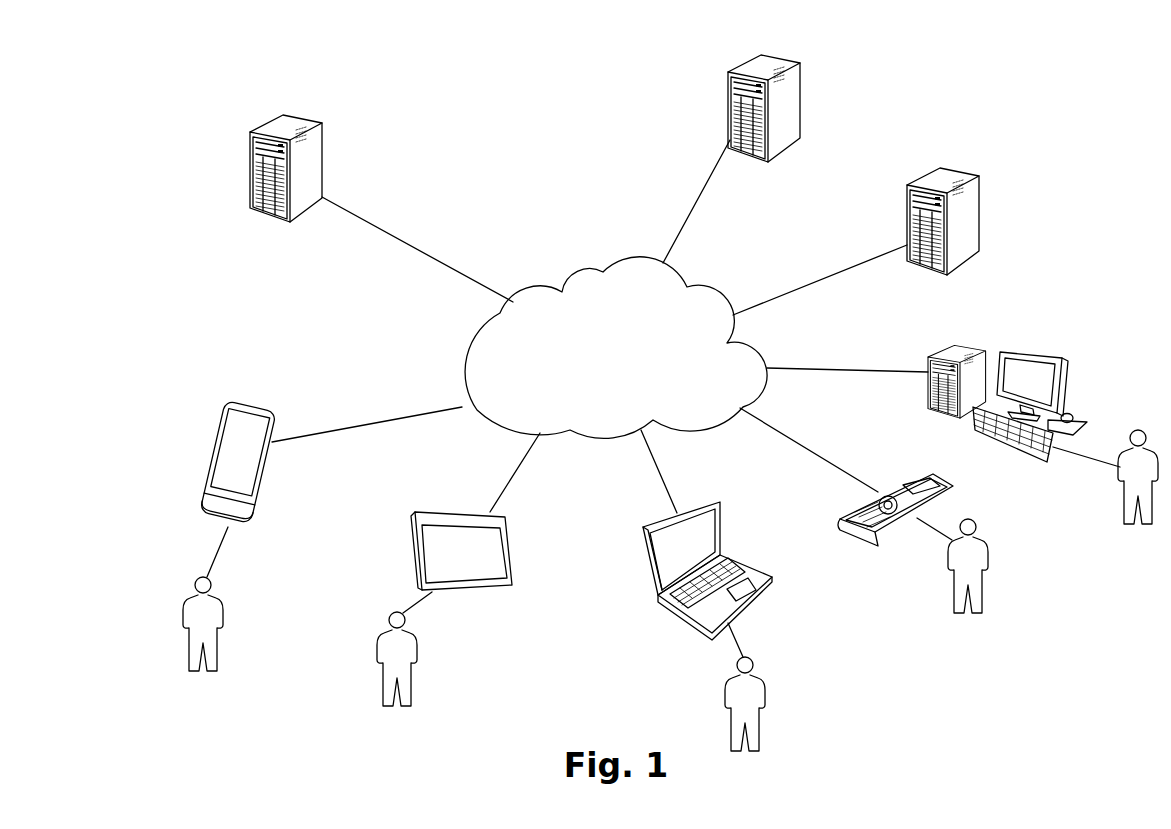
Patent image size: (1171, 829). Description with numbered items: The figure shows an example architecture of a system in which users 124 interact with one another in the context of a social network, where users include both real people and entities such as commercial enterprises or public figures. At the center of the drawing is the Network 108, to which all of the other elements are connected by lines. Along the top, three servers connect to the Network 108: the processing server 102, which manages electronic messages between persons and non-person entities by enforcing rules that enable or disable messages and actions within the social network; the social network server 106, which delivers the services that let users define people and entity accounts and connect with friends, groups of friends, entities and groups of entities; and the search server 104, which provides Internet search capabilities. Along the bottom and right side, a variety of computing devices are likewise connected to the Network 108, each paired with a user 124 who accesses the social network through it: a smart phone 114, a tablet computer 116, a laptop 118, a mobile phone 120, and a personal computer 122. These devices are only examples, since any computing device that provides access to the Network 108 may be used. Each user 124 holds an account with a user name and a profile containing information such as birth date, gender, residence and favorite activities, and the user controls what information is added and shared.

The processing server 102 is at (268, 187).
The search server 104 is at (970, 223).
The social network server 106 is at (742, 128).
The network 108 is at (575, 280).
The smart phone 114 is at (220, 435).
The tablet computer 116 is at (437, 550).
The laptop 118 is at (702, 528).
The mobile phone 120 is at (917, 490).
The personal computer 122 is at (1045, 382).
The users 124 is at (190, 617).